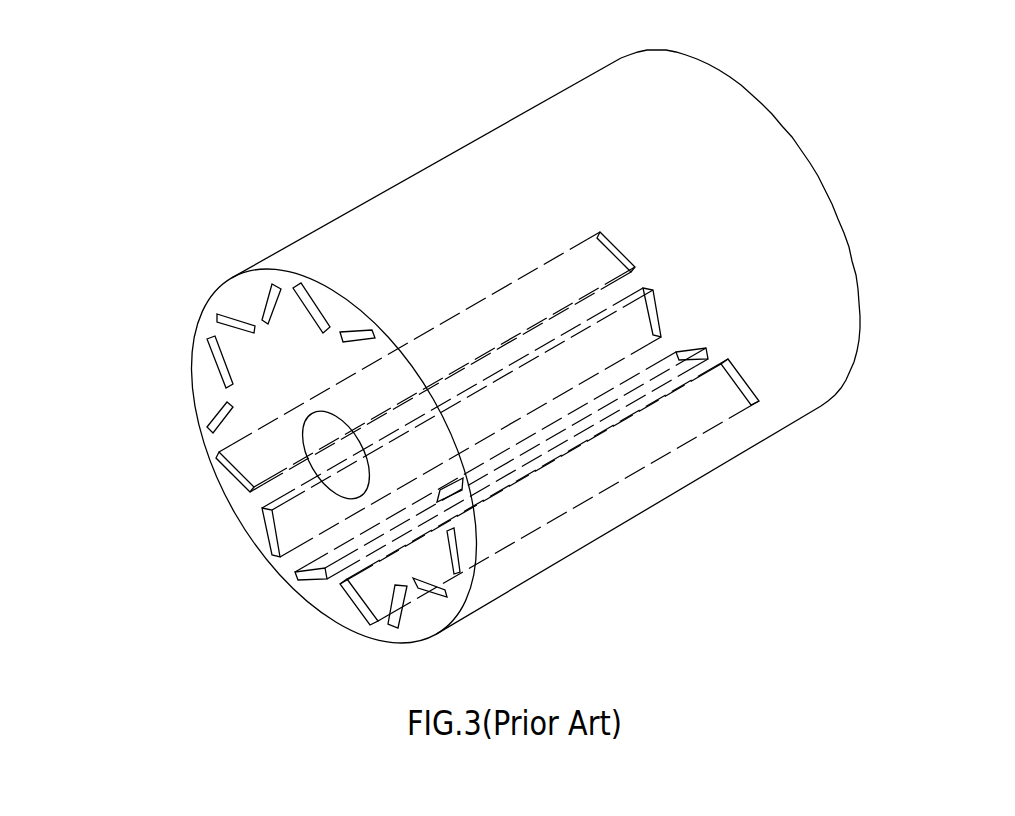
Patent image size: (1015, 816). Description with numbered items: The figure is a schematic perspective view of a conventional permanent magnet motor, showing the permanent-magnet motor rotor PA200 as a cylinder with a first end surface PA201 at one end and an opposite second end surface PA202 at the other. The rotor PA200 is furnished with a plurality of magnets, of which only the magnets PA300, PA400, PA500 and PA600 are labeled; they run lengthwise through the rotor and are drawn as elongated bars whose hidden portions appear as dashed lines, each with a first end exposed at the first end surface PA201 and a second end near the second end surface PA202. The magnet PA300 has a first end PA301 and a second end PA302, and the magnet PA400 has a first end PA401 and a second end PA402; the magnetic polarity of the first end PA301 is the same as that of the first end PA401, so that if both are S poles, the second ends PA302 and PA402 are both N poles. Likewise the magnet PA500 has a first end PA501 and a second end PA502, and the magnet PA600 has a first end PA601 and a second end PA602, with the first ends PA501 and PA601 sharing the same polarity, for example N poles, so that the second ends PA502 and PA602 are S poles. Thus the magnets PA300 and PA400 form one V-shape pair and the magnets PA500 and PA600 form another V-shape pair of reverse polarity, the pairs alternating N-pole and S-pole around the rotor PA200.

The permanent-magnet motor rotor PA200 is at (172, 283).
The first end surface PA201 is at (207, 384).
The second end surface PA202 is at (846, 186).
The magnet PA300 is at (406, 614).
The first end of the magnet PA300 PA301 is at (347, 590).
The second end of the magnet PA300 PA302 is at (838, 384).
The magnet PA400 is at (520, 468).
The first end of the magnet PA400 PA401 is at (295, 574).
The second end of the magnet PA400 PA402 is at (793, 289).
The magnet PA500 is at (525, 363).
The first end of the magnet PA500 PA501 is at (265, 533).
The second end of the magnet PA500 PA502 is at (658, 297).
The magnet PA600 is at (440, 324).
The first end of the magnet PA600 PA601 is at (233, 478).
The second end of the magnet PA600 PA602 is at (631, 258).